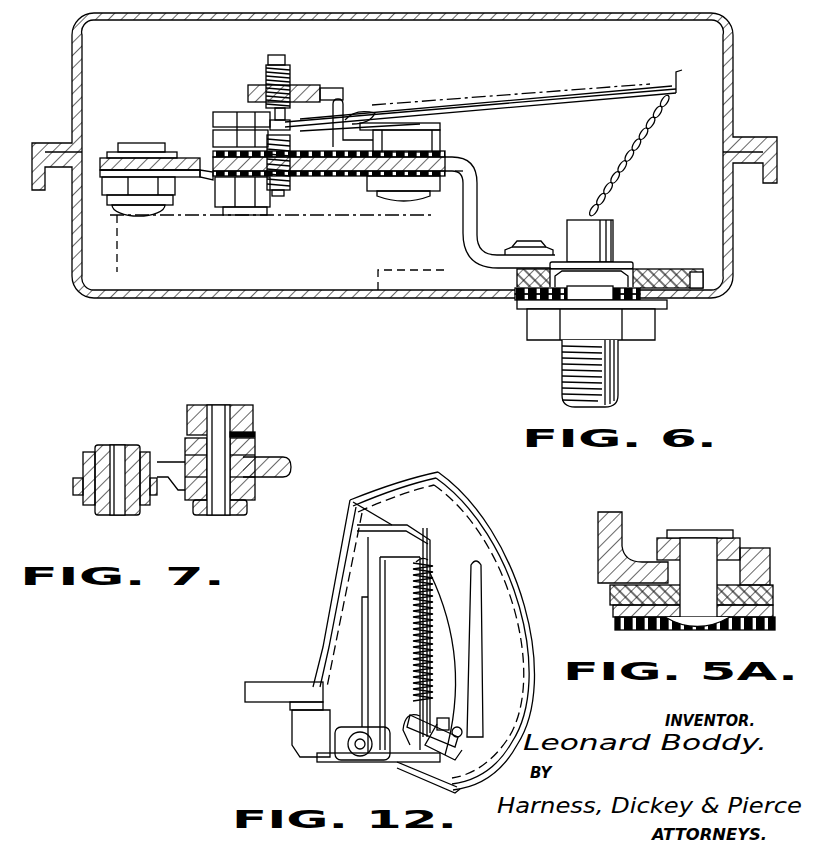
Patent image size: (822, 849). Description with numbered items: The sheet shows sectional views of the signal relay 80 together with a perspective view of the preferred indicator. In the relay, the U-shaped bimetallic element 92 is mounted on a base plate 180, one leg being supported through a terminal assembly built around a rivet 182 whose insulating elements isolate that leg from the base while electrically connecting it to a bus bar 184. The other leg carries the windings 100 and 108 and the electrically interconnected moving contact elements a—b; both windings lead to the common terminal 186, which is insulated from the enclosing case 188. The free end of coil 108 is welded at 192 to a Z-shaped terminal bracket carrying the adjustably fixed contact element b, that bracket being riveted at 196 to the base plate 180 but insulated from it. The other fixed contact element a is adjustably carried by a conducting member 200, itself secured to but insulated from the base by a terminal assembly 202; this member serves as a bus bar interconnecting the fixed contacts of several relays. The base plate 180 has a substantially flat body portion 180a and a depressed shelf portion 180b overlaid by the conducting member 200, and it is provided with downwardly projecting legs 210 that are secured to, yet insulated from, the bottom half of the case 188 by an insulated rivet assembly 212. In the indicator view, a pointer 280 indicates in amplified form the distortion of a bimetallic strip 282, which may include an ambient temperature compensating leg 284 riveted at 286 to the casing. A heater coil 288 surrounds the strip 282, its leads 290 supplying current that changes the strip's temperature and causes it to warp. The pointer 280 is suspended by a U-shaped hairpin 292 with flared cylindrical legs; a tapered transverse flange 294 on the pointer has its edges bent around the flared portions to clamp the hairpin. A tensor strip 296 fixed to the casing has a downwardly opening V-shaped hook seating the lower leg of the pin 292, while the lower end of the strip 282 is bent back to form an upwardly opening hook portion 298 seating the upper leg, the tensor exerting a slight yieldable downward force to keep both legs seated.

In FIG. 6, the relay 80 is at (421, 337).
In FIG. 12, the relay 80 is at (531, 577).
In FIG. 6, the bimetallic element 92 is at (402, 108).
In FIG. 7, the bimetallic element 92 is at (256, 432).
In FIG. 6, the winding 100 is at (358, 115).
In FIG. 6, the winding 108 is at (345, 138).
In FIG. 6, the base plate 180 is at (480, 184).
In FIG. 7, the base plate 180 is at (292, 462).
In FIG. 6, the flat body portion 180a is at (357, 188).
In FIG. 6, the depressed shelf portion 180b is at (190, 196).
In FIG. 6, the rivet 182 is at (232, 98).
In FIG. 7, the rivet 182 is at (234, 403).
In FIG. 6, the bus bar 184 is at (205, 203).
In FIG. 6, the common terminal 186 is at (613, 232).
In FIG. 6, the enclosing case 188 is at (286, 299).
In FIG. 6, the weld 192 is at (358, 118).
In FIG. 6, the rivet 196 is at (408, 135).
In FIG. 6, the conducting member 200 is at (192, 151).
In FIG. 7, the conducting member 200 is at (83, 468).
In FIG. 7, the terminal assembly 202 is at (101, 442).
In FIG. 6, the legs 210 is at (466, 211).
In FIG. 5A, the legs 210 is at (624, 535).
In FIG. 6, the insulated rivet assembly 212 is at (547, 231).
In FIG. 5A, the insulated rivet assembly 212 is at (706, 530).
In FIG. 12, the pointer 280 is at (480, 654).
In FIG. 12, the bimetallic strip 282 is at (432, 587).
In FIG. 12, the ambient temperature compensating leg 284 is at (363, 650).
In FIG. 12, the rivet 286 is at (358, 752).
In FIG. 12, the heater coil 288 is at (430, 628).
In FIG. 12, the leads 290 is at (430, 562).
In FIG. 12, the hairpin 292 is at (420, 716).
In FIG. 12, the tapered transverse flange 294 is at (450, 740).
In FIG. 12, the tensor strip 296 is at (415, 764).
In FIG. 12, the hook portion 298 is at (438, 724).
In FIG. 6, the contact element a is at (292, 134).
In FIG. 6, the contact element b is at (295, 104).